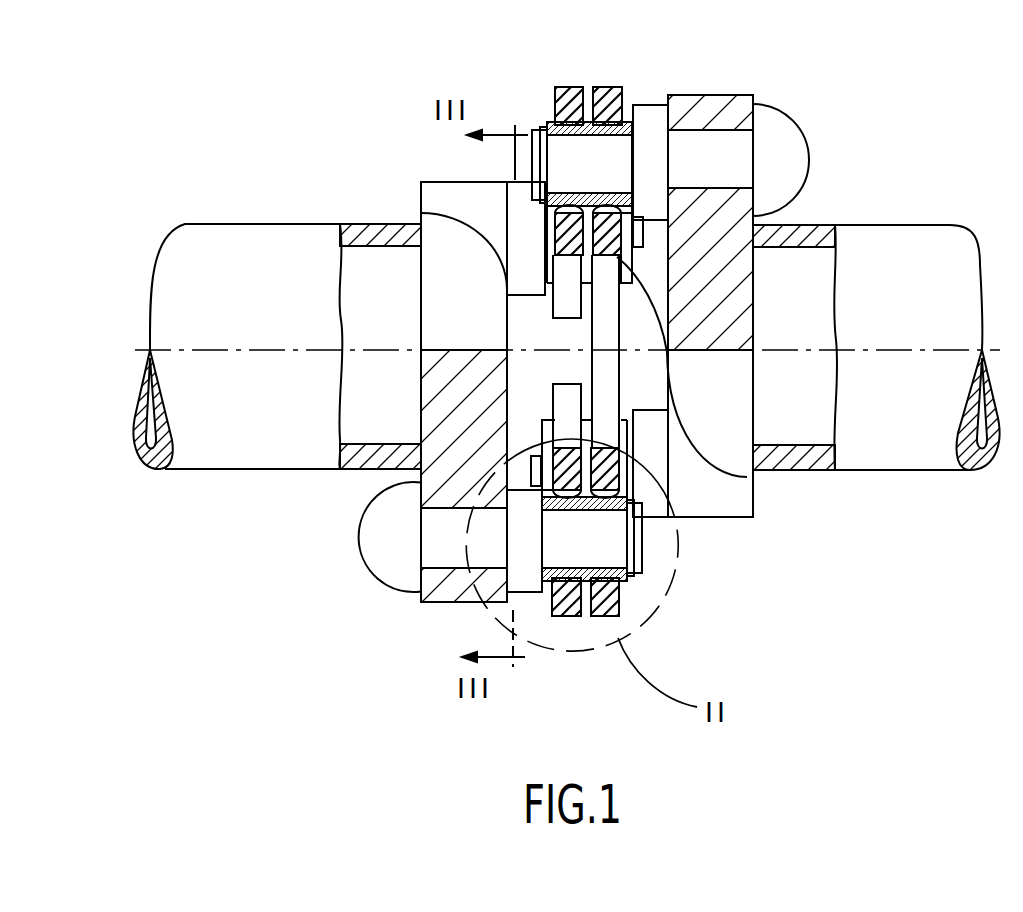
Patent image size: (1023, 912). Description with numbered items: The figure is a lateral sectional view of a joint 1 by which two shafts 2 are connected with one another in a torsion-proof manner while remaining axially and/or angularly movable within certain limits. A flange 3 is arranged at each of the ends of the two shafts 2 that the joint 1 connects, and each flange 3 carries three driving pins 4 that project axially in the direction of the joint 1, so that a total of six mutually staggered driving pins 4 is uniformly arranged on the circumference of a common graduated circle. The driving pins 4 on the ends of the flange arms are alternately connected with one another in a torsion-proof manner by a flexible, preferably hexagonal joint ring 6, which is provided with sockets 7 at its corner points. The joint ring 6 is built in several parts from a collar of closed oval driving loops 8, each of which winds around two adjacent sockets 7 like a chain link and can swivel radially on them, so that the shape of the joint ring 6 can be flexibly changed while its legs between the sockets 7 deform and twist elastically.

The joint 1 is at (604, 356).
The shaft 2 is at (262, 247).
The flange 3 is at (448, 187).
The driving pin 4 is at (738, 157).
The joint ring 6 is at (547, 617).
The socket 7 is at (552, 127).
The driving loop 8 is at (616, 470).